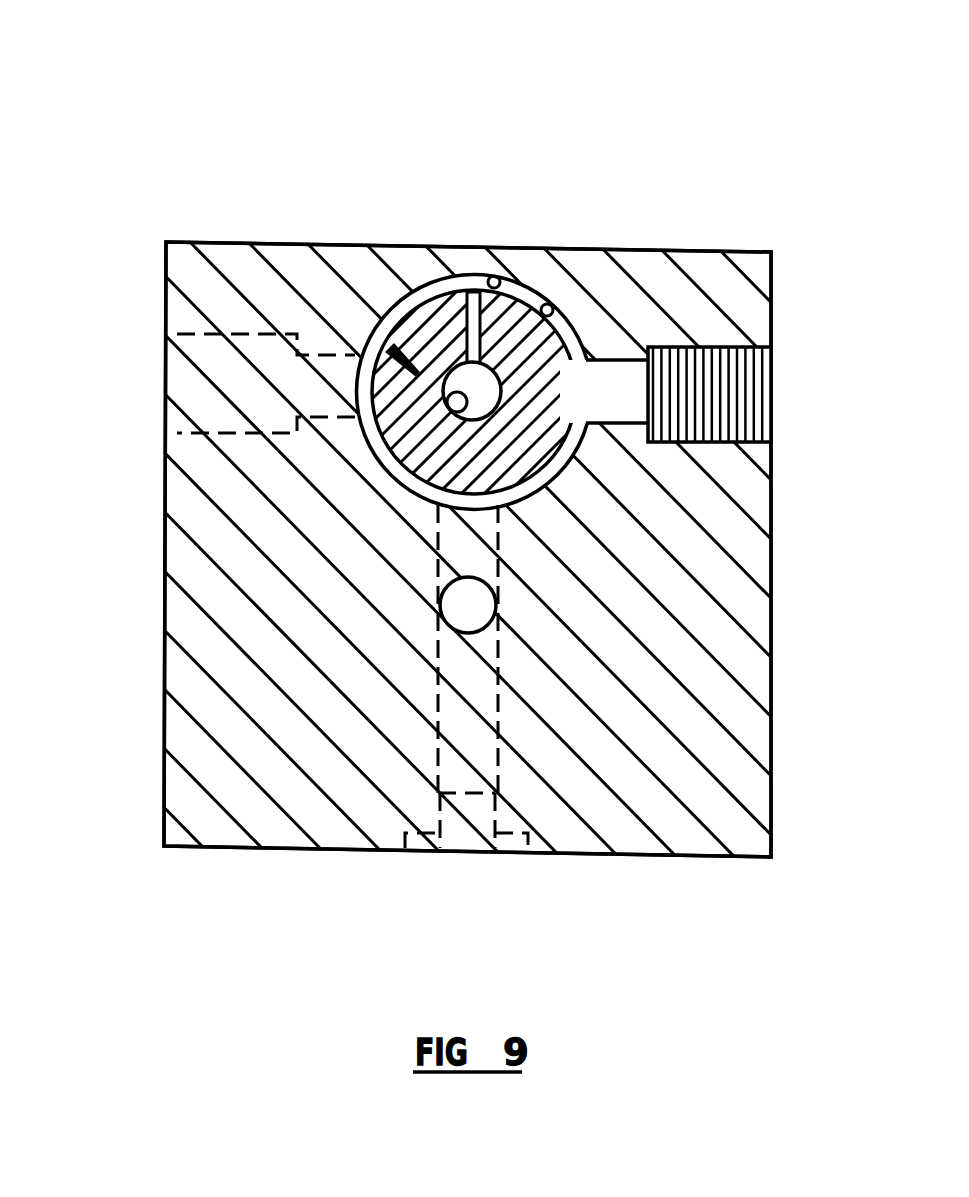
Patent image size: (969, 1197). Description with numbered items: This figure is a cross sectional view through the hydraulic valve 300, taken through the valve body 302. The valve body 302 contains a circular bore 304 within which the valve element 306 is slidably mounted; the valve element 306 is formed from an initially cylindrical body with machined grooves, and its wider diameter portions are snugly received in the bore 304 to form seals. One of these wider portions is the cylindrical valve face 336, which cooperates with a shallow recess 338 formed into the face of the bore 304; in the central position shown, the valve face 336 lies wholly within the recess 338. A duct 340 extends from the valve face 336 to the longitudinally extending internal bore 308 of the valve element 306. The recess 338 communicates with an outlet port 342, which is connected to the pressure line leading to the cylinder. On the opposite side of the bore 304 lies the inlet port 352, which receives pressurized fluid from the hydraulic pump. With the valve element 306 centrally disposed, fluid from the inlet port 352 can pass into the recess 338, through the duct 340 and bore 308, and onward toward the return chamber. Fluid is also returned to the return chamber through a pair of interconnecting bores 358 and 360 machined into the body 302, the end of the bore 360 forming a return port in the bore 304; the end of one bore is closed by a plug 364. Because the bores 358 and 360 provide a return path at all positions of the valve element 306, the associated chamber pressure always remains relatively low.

The valve assembly 300 is at (155, 112).
The valve body 302 is at (140, 294).
The circular bore 304 is at (552, 312).
The valve element 306 is at (390, 350).
The longitudinally extending bore 308 is at (455, 404).
The cylindrical valve face 336 is at (577, 352).
The shallow recess 338 is at (500, 280).
The duct 340 is at (466, 300).
The outlet port 342 is at (737, 395).
The inlet port 352 is at (212, 432).
The interconnecting bore 358 is at (490, 612).
The interconnecting bore 360 is at (468, 558).
The plug 364 is at (472, 850).